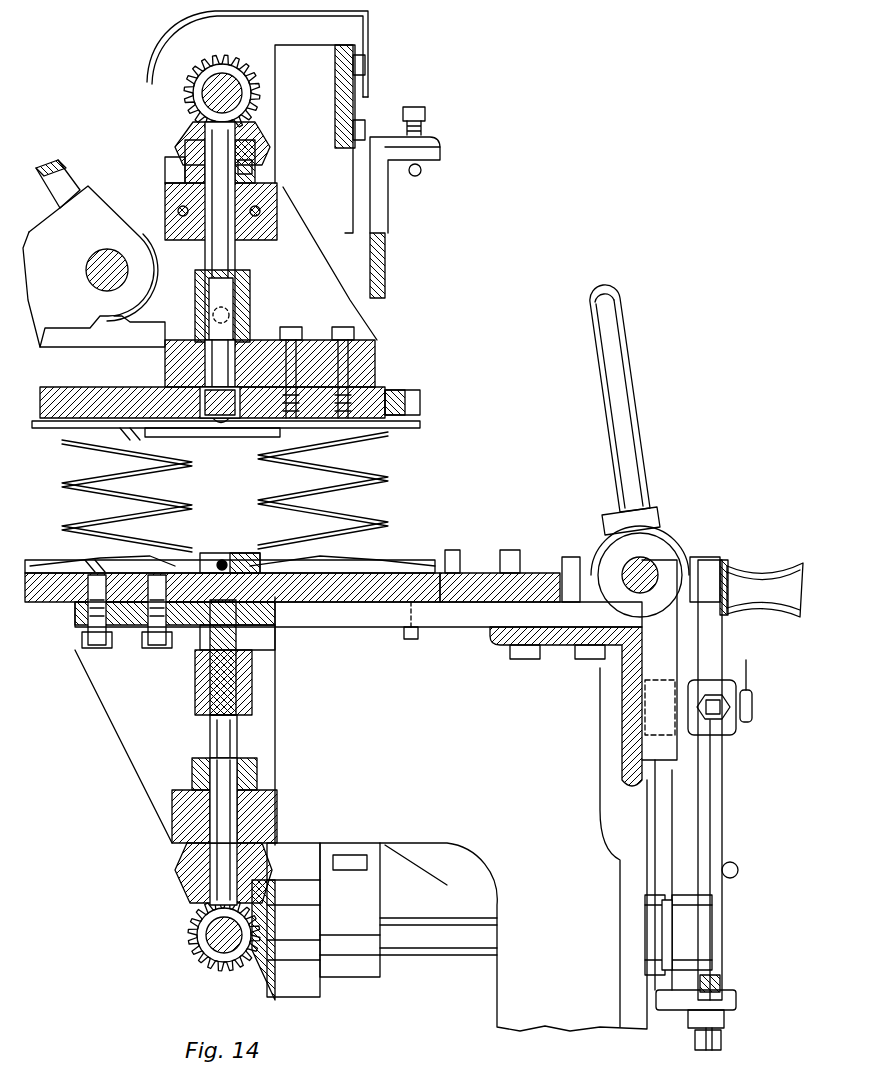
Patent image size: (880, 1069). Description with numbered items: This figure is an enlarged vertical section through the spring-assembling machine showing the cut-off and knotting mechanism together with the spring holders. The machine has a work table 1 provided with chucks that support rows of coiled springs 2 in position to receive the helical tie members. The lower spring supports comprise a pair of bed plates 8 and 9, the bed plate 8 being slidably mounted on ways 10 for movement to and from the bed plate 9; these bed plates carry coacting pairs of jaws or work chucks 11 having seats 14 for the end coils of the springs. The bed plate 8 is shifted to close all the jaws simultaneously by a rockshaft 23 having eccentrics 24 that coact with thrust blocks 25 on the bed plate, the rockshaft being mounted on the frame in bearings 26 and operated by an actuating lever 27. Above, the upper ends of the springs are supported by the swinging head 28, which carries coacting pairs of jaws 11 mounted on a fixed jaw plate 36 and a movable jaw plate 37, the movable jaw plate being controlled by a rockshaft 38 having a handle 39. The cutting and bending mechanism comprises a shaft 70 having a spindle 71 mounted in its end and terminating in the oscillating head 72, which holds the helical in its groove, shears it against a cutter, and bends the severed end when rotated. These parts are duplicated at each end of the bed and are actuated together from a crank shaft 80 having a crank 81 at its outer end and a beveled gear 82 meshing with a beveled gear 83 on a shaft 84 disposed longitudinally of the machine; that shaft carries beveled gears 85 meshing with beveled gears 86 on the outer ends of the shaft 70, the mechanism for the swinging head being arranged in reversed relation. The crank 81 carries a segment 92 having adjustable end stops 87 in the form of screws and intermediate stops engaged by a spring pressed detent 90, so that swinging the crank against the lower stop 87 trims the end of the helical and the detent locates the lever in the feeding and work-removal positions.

The work table 1 is at (566, 640).
The coiled springs 2 is at (152, 478).
The bed plate 8 is at (455, 592).
The bed plate 9 is at (45, 595).
The ways 10 is at (345, 628).
The jaws or work chucks 11 is at (248, 437).
The seats 14 is at (135, 430).
The rockshaft 23 is at (646, 566).
The eccentrics 24 is at (603, 560).
The thrust blocks 25 is at (570, 575).
The bearings 26 is at (668, 628).
The actuating lever 27 is at (612, 384).
The swinging head 28 is at (165, 215).
The fixed jaw plate 36 is at (392, 400).
The movable jaw plate 37 is at (55, 418).
The rockshaft 38 is at (108, 255).
The handle 39 is at (65, 165).
The shaft 70 is at (232, 258).
The spindle 71 is at (238, 335).
The oscillating head 72 is at (213, 388).
The crank shaft 80 is at (425, 948).
The crank 81 is at (720, 770).
The beveled gear 82 is at (278, 990).
The beveled gear 83 is at (236, 975).
The shaft 84 is at (262, 73).
The beveled gears 85 is at (250, 100).
The beveled gears 86 is at (266, 139).
The adjustable end stops 87 is at (418, 165).
The spring pressed detent 90 is at (754, 704).
The segment 92 is at (388, 256).